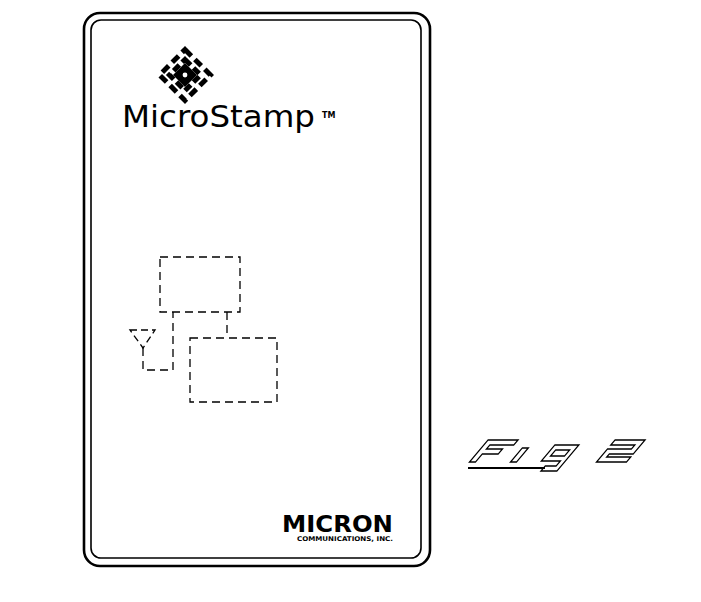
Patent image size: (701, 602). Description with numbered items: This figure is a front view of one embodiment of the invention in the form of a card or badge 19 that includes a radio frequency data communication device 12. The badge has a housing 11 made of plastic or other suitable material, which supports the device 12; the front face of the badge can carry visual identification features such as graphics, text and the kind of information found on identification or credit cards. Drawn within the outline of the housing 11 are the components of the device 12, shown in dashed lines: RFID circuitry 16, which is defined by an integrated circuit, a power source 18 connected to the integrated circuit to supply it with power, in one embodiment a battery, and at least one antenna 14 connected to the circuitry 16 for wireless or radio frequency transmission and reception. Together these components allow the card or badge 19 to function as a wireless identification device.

The housing 11 is at (123, 492).
The radio frequency data communication device 12 is at (250, 333).
The antenna 14 is at (137, 328).
The RFID circuitry 16 is at (200, 255).
The power source 18 is at (232, 403).
The card or badge 19 is at (385, 165).